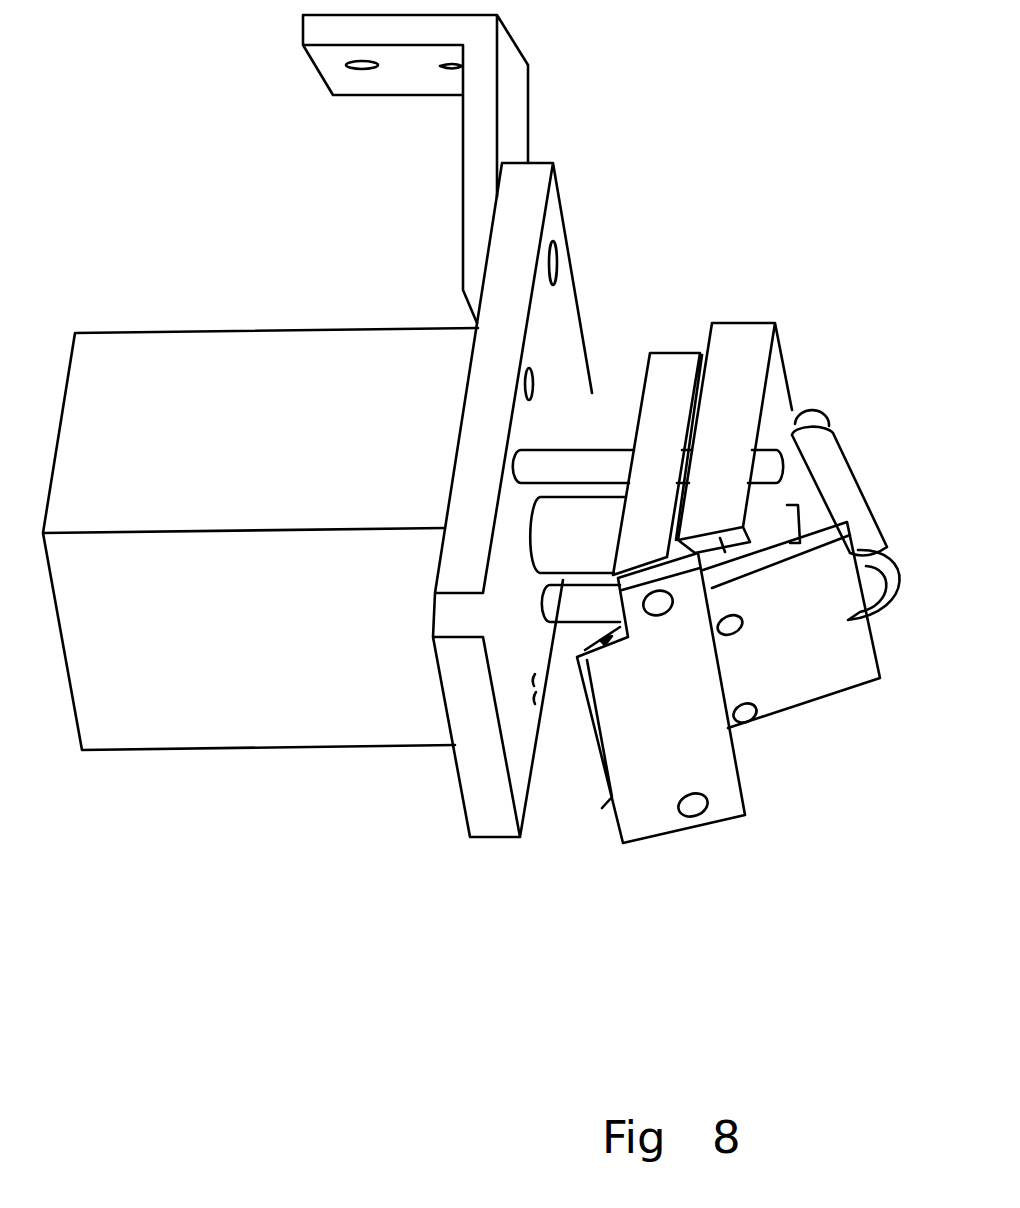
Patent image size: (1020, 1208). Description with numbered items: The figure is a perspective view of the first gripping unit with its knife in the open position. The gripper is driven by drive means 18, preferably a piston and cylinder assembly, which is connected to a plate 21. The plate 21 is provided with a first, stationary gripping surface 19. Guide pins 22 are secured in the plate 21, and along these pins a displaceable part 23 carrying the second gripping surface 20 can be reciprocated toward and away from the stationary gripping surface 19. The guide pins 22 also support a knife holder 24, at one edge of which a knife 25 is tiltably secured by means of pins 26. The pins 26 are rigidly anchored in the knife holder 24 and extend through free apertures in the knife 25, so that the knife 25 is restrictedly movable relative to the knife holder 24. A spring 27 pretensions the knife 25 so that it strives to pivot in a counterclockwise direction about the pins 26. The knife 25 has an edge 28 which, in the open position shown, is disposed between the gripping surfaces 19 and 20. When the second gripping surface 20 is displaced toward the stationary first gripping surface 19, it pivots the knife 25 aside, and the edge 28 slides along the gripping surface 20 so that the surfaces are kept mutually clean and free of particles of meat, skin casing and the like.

The drive means 18 is at (190, 720).
The first stationary gripping surface 19 is at (515, 773).
The second gripping surface 20 is at (620, 837).
The plate 21 is at (563, 293).
The guide pins 22 is at (600, 467).
The displaceable part 23 is at (670, 382).
The knife holder 24 is at (743, 337).
The knife 25 is at (833, 673).
The pins 26 is at (782, 777).
The spring 27 is at (838, 472).
The edge 28 is at (590, 753).